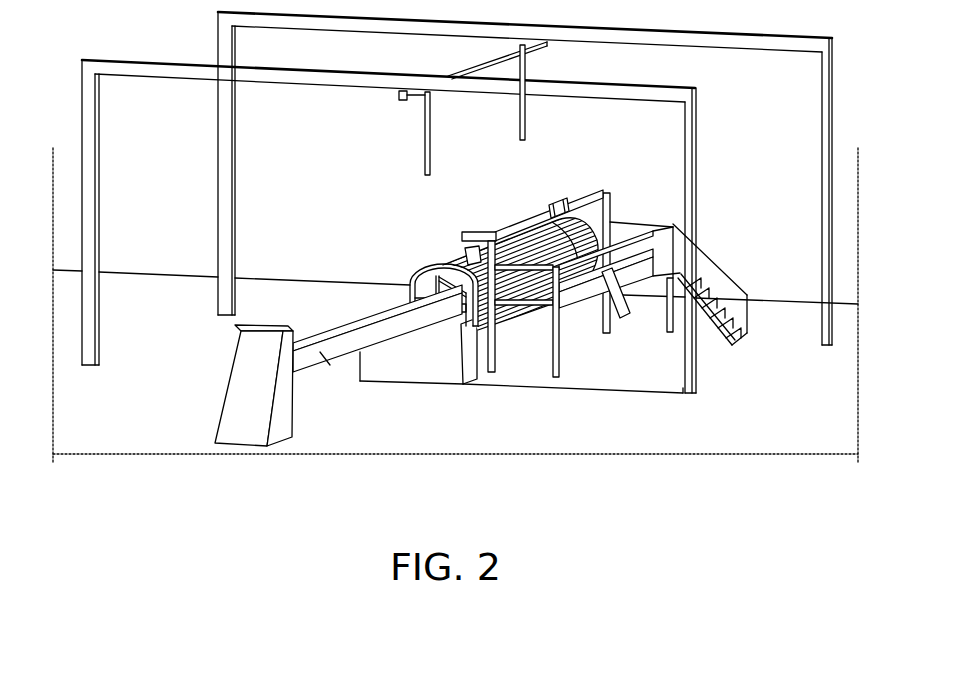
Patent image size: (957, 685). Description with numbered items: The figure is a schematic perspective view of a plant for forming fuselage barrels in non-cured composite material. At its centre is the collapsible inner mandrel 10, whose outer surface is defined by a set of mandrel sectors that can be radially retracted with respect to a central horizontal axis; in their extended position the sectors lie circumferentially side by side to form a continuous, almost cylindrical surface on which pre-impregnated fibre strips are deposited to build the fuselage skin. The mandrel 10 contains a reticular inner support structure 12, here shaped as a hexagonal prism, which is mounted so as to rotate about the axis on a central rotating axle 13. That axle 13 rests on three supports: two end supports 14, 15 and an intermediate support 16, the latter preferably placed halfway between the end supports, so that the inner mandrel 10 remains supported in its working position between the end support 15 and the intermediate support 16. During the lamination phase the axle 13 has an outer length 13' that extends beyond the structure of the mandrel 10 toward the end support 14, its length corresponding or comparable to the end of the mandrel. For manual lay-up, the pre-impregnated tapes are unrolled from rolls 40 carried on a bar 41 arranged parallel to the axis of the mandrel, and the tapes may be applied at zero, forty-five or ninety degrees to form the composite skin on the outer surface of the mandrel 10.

The collapsible inner mandrel 10 is at (441, 253).
The reticular inner support structure 12 is at (412, 272).
The central rotating axle 13 is at (377, 390).
The outer length of the axle 13' is at (339, 438).
The end support 14 is at (242, 413).
The end support 15 is at (621, 316).
The intermediate support 16 is at (483, 392).
The roll 40 is at (563, 197).
The bar 41 is at (504, 219).